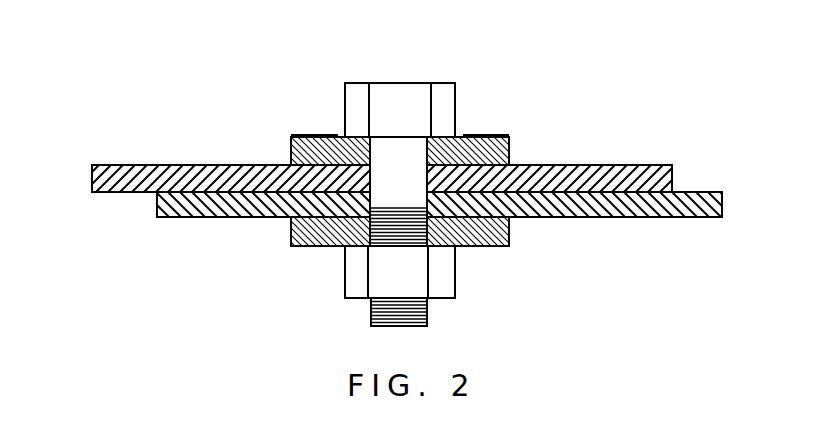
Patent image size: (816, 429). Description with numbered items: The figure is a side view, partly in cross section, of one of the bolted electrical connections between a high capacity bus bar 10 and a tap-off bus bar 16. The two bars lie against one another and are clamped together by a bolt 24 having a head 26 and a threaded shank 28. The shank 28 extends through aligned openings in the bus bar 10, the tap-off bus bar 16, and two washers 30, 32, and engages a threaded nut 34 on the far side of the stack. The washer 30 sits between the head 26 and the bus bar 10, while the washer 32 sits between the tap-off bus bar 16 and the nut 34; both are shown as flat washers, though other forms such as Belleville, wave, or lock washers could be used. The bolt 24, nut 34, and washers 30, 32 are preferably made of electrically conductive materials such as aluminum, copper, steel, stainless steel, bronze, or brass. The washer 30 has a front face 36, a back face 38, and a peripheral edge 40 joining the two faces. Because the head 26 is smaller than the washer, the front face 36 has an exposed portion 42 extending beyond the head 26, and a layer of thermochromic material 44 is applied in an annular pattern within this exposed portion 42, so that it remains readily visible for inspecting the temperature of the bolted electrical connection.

The bus bar 10 is at (141, 165).
The tap-off bus bar 16 is at (683, 218).
The bolt 24 is at (418, 78).
The head 26 is at (458, 84).
The threaded shank 28 is at (428, 312).
The washer 30 is at (516, 146).
The washer 32 is at (516, 233).
The threaded nut 34 is at (358, 278).
The front face 36 is at (318, 134).
The back face 38 is at (310, 167).
The peripheral edge 40 is at (290, 148).
The exposed portion 42 is at (460, 133).
The layer of thermochromic material 44 is at (292, 134).